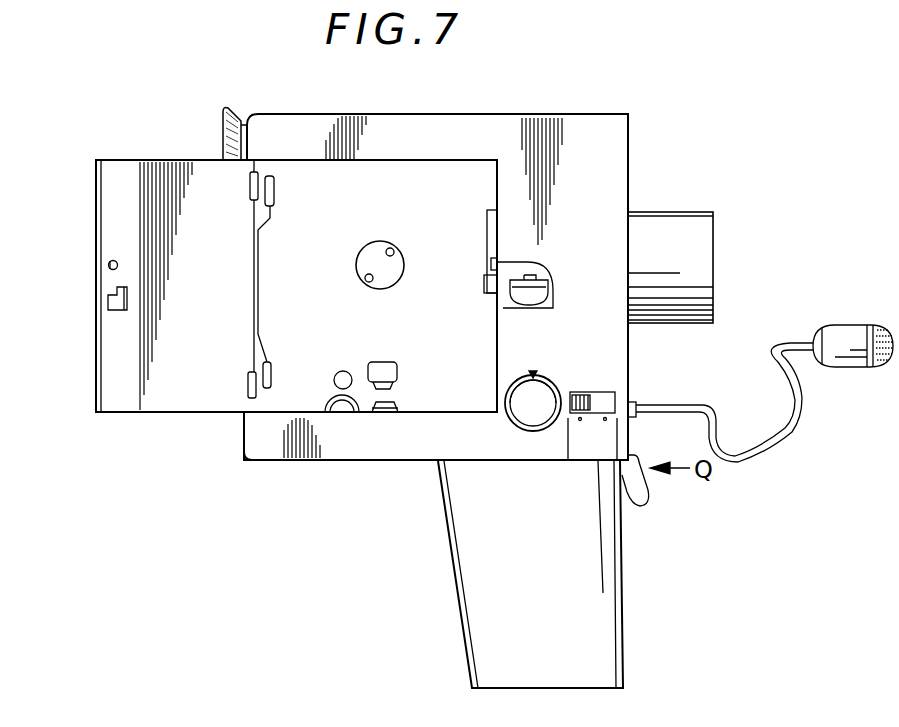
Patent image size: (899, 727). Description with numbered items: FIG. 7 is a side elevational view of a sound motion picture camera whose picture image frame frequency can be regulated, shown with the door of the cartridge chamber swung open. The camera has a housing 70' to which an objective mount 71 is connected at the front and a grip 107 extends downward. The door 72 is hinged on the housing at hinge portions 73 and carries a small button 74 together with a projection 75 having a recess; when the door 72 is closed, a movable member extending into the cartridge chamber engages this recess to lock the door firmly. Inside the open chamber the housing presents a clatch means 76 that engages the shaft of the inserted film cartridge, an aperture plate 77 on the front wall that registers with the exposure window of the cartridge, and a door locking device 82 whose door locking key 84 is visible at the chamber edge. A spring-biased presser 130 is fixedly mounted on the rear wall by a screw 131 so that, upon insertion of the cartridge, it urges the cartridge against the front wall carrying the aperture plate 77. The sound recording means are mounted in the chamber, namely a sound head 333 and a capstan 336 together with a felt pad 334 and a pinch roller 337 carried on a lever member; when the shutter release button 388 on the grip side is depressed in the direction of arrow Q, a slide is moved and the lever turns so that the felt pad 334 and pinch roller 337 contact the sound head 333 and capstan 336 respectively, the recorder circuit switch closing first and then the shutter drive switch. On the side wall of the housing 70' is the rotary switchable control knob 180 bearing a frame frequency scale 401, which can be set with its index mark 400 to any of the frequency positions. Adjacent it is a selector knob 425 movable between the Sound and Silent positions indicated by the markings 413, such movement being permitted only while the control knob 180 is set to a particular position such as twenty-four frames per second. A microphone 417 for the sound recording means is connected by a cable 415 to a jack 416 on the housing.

The housing 70' is at (452, 284).
The objective mount 71 is at (672, 228).
The door 72 is at (182, 380).
The hinge portions 73 is at (251, 186).
The button 74 is at (108, 265).
The projection 75 is at (105, 305).
The clatch means 76 is at (381, 243).
The aperture plate 77 is at (492, 226).
The door locking device 82 is at (484, 282).
The door locking key 84 is at (531, 292).
The grip 107 is at (595, 626).
The spring-biased presser 130 is at (274, 190).
The screw 131 is at (259, 276).
The rotary switchable control knob 180 is at (530, 420).
The sound head 333 is at (385, 370).
The felt pad 334 is at (390, 403).
The capstan 336 is at (340, 371).
The pinch roller 337 is at (350, 405).
The shutter release button 388 is at (642, 498).
The index mark 400 is at (530, 372).
The frame frequency scale 401 is at (538, 386).
The label panel 413 is at (597, 446).
The microphone cable 415 is at (762, 450).
The jack 416 is at (637, 405).
The microphone 417 is at (838, 333).
The selector knob 425 is at (580, 392).